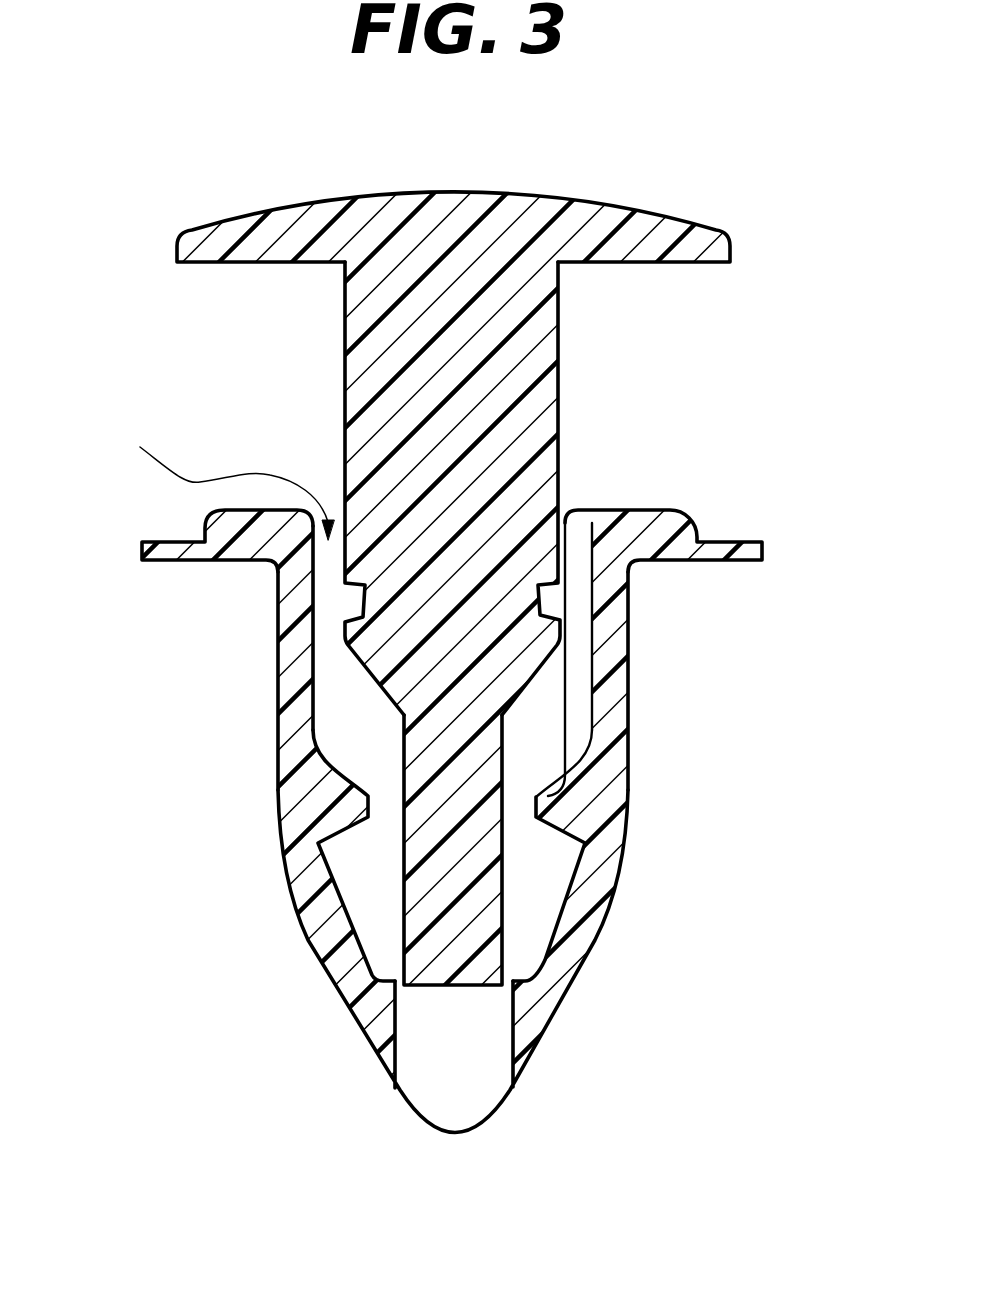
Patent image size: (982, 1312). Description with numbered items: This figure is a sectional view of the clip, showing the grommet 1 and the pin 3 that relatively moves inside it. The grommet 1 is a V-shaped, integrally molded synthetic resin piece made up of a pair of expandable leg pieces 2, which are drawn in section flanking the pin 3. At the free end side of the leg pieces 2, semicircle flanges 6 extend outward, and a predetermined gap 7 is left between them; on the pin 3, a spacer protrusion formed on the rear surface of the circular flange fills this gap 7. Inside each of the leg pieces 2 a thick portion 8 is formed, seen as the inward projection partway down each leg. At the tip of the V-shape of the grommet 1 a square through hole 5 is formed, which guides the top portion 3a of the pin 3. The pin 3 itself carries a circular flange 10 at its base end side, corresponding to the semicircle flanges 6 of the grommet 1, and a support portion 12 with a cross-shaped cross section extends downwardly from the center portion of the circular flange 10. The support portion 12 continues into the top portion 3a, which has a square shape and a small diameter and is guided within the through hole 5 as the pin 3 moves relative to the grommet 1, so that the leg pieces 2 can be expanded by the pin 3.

The grommet 1 is at (491, 697).
The leg pieces 2 is at (287, 680).
The pin 3 is at (491, 656).
The top portion 3a is at (430, 898).
The through hole 5 is at (442, 1108).
The semicircle flanges 6 is at (150, 548).
The gap 7 is at (228, 482).
The thick portion 8 is at (357, 803).
The circular flange 10 is at (461, 214).
The support portion 12 is at (547, 355).